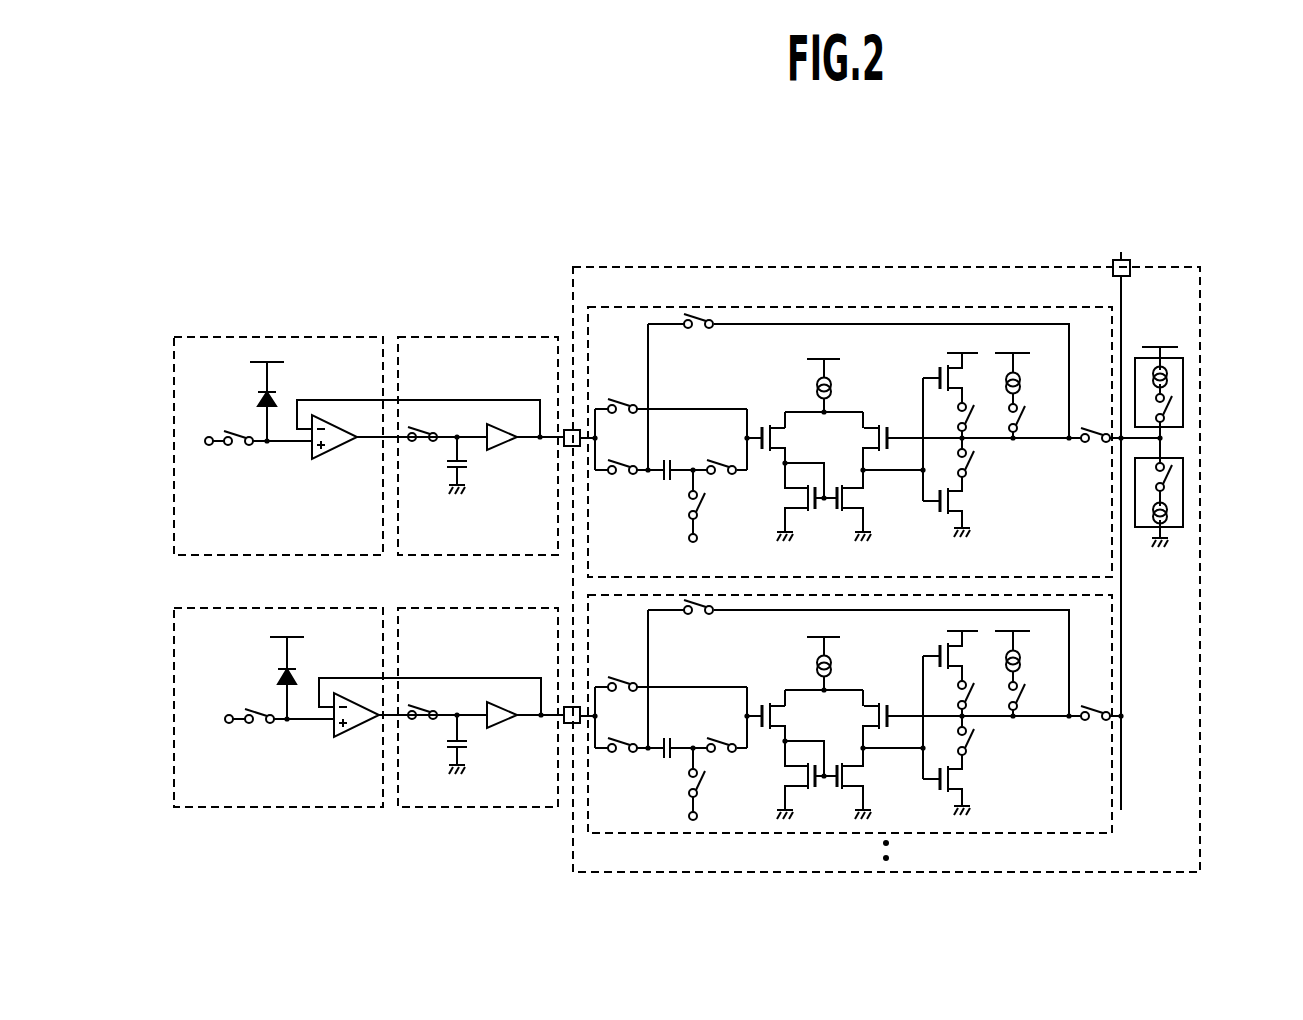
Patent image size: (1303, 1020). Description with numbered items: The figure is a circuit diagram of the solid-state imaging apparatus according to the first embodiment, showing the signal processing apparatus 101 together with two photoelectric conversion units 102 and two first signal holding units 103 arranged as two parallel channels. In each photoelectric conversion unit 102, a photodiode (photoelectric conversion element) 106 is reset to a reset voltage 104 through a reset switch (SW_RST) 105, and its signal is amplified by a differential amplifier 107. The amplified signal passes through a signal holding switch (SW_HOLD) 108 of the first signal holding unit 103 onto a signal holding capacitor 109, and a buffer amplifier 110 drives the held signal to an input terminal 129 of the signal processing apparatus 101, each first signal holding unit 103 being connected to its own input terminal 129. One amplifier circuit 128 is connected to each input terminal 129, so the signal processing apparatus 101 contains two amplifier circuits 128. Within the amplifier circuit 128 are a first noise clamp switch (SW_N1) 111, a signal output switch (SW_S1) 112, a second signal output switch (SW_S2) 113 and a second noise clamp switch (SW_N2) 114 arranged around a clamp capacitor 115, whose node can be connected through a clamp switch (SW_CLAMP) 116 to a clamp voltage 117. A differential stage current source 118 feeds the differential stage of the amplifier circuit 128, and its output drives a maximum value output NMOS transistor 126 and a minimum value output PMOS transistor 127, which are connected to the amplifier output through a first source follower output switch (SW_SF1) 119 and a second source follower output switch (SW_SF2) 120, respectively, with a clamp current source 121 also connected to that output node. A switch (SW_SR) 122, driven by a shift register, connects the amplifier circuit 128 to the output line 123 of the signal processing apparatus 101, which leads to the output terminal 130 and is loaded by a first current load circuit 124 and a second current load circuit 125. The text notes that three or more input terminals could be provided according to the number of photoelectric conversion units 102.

The signal processing apparatus 101 is at (573, 283).
The photoelectric conversion unit 102 is at (236, 337).
The first signal holding unit 103 is at (436, 337).
The reset voltage 104 is at (209, 446).
The reset switch 105 is at (240, 430).
The photodiode 106 is at (260, 400).
The differential amplifier 107 is at (340, 456).
The signal holding switch 108 is at (423, 424).
The signal holding capacitor 109 is at (452, 467).
The buffer amplifier 110 is at (511, 432).
The first noise clamp switch 111 is at (620, 402).
The signal output switch 112 is at (622, 477).
The second signal output switch 113 is at (724, 480).
The second noise clamp switch 114 is at (699, 320).
The clamp capacitor 115 is at (667, 486).
The clamp switch 116 is at (696, 508).
The clamp voltage 117 is at (699, 542).
The differential stage current source 118 is at (814, 388).
The first source follower output switch 119 is at (972, 420).
The second source follower output switch 120 is at (971, 464).
The clamp current source 121 is at (1021, 390).
The switch 122 is at (1090, 429).
The output line 123 is at (1122, 297).
The first current load circuit 124 is at (1183, 378).
The second current load circuit 125 is at (1183, 475).
The maximum value output NMOS transistor 126 is at (938, 376).
The minimum value output PMOS transistor 127 is at (935, 506).
The amplifier circuit 128 is at (822, 307).
The input terminal 129 is at (560, 447).
The output terminal 130 is at (1130, 268).